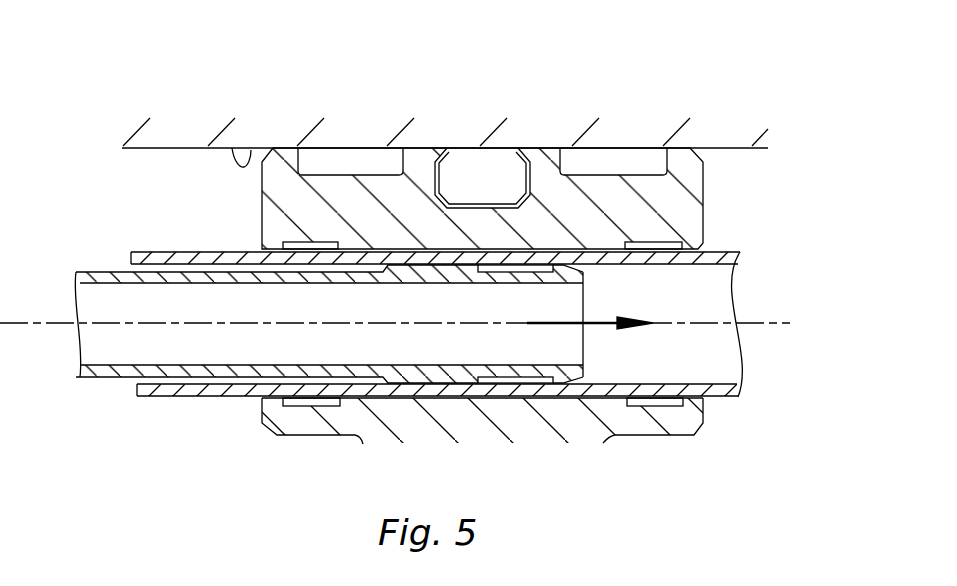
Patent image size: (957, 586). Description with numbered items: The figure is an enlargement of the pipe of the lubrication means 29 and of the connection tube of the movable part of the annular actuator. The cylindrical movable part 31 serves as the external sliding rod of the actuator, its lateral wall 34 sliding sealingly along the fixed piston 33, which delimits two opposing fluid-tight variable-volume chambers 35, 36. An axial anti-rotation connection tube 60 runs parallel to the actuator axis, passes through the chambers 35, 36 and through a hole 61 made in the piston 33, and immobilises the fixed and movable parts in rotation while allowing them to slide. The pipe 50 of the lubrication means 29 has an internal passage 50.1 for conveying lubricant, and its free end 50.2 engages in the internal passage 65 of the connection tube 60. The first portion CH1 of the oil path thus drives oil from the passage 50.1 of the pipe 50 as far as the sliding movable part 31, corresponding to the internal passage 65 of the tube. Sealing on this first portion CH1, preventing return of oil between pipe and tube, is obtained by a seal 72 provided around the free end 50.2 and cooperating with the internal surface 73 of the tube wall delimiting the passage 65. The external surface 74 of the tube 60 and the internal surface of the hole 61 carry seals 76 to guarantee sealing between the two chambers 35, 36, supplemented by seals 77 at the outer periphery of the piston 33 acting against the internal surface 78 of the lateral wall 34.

The lubrication means 29 is at (105, 260).
The movable part 31 is at (183, 100).
The piston 33 is at (670, 203).
The lateral wall 34 is at (547, 137).
The variable-volume chamber 35 is at (197, 211).
The variable-volume chamber 36 is at (775, 209).
The pipe 50 is at (97, 378).
The internal passage 50.1 is at (153, 314).
The free end 50.2 is at (583, 352).
The connection tube 60 is at (192, 397).
The hole 61 is at (398, 398).
The internal passage 65 is at (693, 302).
The seal 72 is at (556, 384).
The internal surface 73 is at (712, 376).
The external surface 74 is at (485, 398).
The seals 76 is at (302, 406).
The seals 77 is at (362, 163).
The internal surface 78 is at (252, 149).
The first portion CH1 is at (718, 347).